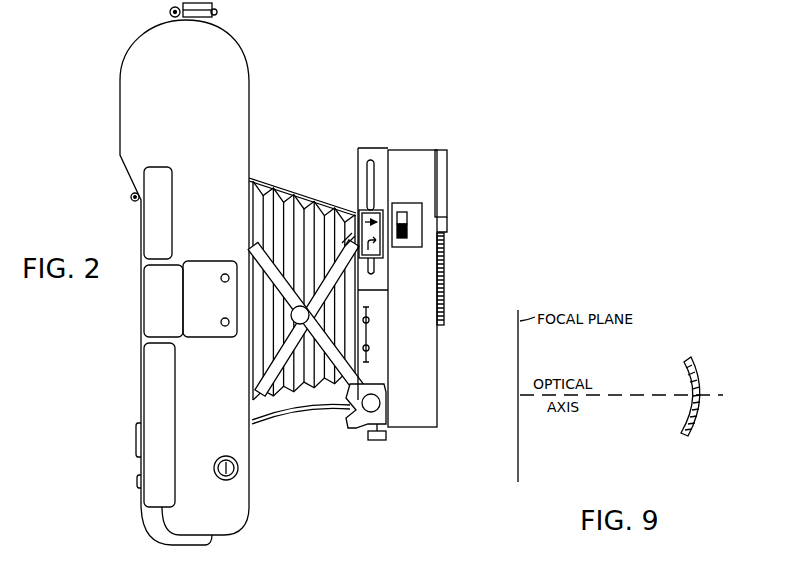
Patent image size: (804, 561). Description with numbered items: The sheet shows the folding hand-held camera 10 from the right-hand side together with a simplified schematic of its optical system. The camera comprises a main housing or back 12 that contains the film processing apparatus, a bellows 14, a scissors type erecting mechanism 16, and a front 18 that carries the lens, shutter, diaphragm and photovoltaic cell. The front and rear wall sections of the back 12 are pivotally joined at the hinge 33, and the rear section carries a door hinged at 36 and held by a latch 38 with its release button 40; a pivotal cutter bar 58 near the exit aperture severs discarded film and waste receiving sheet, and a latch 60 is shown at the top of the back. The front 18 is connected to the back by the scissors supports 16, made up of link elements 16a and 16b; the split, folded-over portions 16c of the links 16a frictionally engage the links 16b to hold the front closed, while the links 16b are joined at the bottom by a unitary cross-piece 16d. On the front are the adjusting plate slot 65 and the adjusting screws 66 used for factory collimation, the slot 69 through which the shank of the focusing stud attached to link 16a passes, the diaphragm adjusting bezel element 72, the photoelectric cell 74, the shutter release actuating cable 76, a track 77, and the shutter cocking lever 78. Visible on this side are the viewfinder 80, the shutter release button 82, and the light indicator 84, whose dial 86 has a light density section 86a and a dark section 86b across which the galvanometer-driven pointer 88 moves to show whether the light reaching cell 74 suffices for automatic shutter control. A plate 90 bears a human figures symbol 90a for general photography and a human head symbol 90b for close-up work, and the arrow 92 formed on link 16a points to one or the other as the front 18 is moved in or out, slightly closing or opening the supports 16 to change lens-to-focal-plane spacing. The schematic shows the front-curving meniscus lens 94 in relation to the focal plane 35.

In FIG. 2, the camera 10 is at (110, 110).
In FIG. 2, the main housing or back 12 is at (246, 65).
In FIG. 2, the bellows 14 is at (301, 408).
In FIG. 2, the scissors type erecting mechanism 16 is at (317, 310).
In FIG. 2, the link element 16a is at (311, 324).
In FIG. 2, the link element 16b is at (307, 318).
In FIG. 2, the split and folded-over portion 16c is at (263, 390).
In FIG. 2, the cross-piece 16d is at (348, 418).
In FIG. 2, the front 18 is at (439, 400).
In FIG. 2, the hinge 33 is at (169, 13).
In FIG. 9, the focal plane 35 is at (520, 447).
In FIG. 2, the hinge 36 is at (131, 198).
In FIG. 2, the latch 38 is at (252, 559).
In FIG. 2, the release button 40 is at (137, 441).
In FIG. 2, the pivotal cutter bar 58 is at (152, 522).
In FIG. 2, the latch 60 is at (213, 9).
In FIG. 2, the slot 65 is at (370, 360).
In FIG. 2, the adjusting screws 66 is at (370, 348).
In FIG. 2, the slot 69 is at (371, 162).
In FIG. 2, the diaphragm adjusting bezel element 72 is at (444, 291).
In FIG. 2, the photoelectric cell 74 is at (447, 168).
In FIG. 2, the shutter release actuating cable 76 is at (324, 410).
In FIG. 2, the track 77 is at (330, 559).
In FIG. 2, the shutter cocking lever 78 is at (379, 441).
In FIG. 2, the viewfinder 80 is at (143, 300).
In FIG. 2, the shutter release button 82 is at (238, 471).
In FIG. 2, the indicator 84 is at (424, 211).
In FIG. 2, the dial 86 is at (436, 228).
In FIG. 2, the light density section 86a is at (401, 212).
In FIG. 2, the dark section 86b is at (402, 247).
In FIG. 2, the pointer 88 is at (408, 229).
In FIG. 2, the plate 90 is at (379, 227).
In FIG. 2, the human figures 90a is at (366, 221).
In FIG. 2, the human head 90b is at (378, 262).
In FIG. 2, the arrow 92 is at (347, 243).
In FIG. 9, the front-curving meniscus lens 94 is at (691, 366).